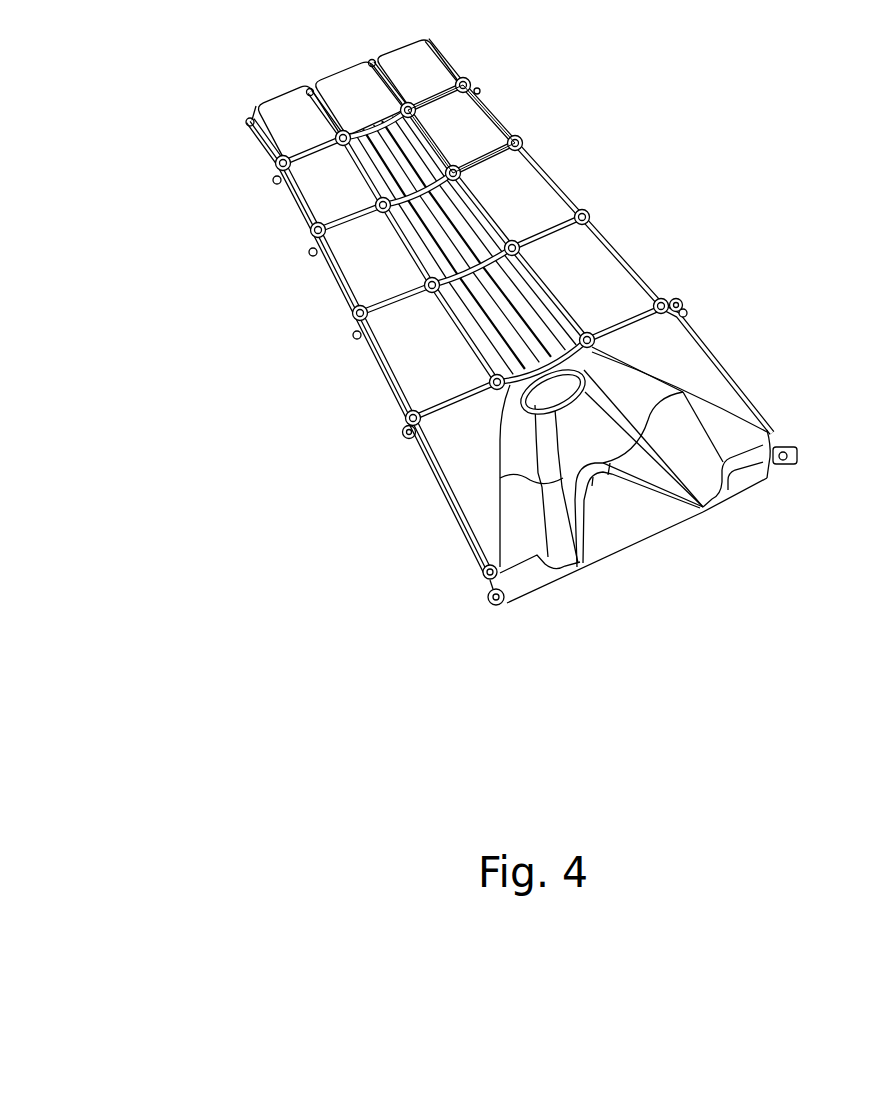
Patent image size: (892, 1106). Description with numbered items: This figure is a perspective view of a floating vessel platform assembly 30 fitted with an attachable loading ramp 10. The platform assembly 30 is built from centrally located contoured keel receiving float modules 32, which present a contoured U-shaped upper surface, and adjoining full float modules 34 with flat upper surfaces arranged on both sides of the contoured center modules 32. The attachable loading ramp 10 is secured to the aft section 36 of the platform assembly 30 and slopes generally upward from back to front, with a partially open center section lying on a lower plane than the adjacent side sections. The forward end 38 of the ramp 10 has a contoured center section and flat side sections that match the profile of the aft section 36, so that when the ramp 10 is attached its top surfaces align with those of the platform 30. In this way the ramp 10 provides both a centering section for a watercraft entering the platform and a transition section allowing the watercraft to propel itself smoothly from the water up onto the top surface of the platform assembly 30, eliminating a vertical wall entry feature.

The attachable loading ramp 10 is at (467, 513).
The floating vessel platform assembly 30 is at (188, 87).
The contoured keel receiving float modules 32 is at (527, 350).
The full float modules 34 is at (530, 192).
The aft section 36 is at (435, 412).
The forward end 38 is at (661, 295).